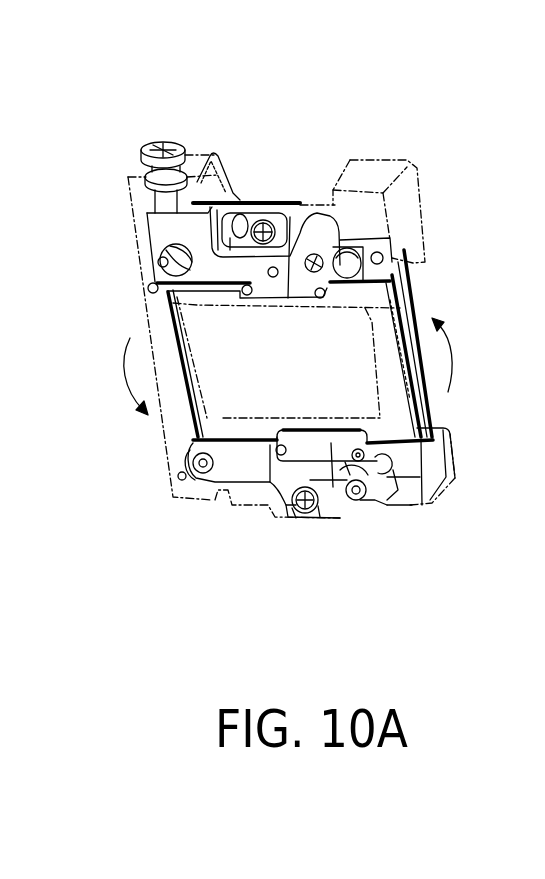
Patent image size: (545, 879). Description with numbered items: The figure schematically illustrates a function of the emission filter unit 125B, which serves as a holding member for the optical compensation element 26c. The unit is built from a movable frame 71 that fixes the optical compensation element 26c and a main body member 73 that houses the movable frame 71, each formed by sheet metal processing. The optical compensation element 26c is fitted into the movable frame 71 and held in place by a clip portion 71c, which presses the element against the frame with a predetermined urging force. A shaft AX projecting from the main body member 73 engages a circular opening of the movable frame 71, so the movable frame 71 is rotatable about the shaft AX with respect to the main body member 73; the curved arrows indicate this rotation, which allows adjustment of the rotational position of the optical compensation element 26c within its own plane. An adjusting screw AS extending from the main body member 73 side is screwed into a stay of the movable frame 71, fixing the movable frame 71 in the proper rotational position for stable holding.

The emission filter unit 125B is at (297, 134).
The adjusting screw AS is at (160, 143).
The shaft AX is at (320, 256).
The main body member 73 is at (417, 187).
The clip portion 71c is at (287, 203).
The optical compensation element 26c is at (405, 297).
The movable frame 71 is at (247, 463).